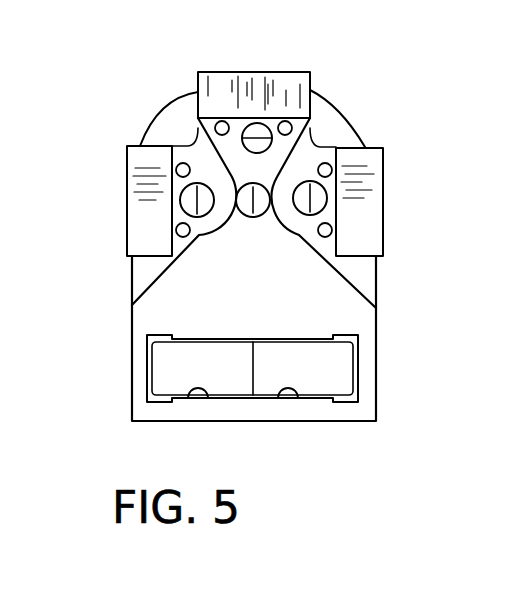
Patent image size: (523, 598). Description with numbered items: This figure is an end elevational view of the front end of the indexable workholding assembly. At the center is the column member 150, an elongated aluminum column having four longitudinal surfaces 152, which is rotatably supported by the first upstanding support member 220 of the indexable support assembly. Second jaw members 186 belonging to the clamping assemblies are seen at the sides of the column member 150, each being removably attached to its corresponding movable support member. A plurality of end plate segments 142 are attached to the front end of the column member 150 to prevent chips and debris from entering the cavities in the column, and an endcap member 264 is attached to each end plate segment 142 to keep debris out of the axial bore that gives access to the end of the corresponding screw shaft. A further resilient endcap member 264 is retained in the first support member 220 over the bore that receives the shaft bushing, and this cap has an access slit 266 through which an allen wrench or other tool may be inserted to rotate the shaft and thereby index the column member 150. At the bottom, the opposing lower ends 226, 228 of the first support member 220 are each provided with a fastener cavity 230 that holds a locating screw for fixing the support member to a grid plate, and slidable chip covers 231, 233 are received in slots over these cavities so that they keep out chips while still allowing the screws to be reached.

The column member 150 is at (330, 85).
The second jaw member 186 is at (207, 84).
The endcap member 264 is at (258, 128).
The access slit 266 is at (250, 217).
The end plate segment 142 is at (303, 140).
The longitudinal surface 152 is at (292, 100).
The first upstanding support member 220 is at (377, 322).
The lower end 226 is at (132, 343).
The lower end 228 is at (379, 375).
The slidable chip cover 231 is at (220, 377).
The slidable chip cover 233 is at (327, 377).
The fastener cavity 230 is at (208, 398).